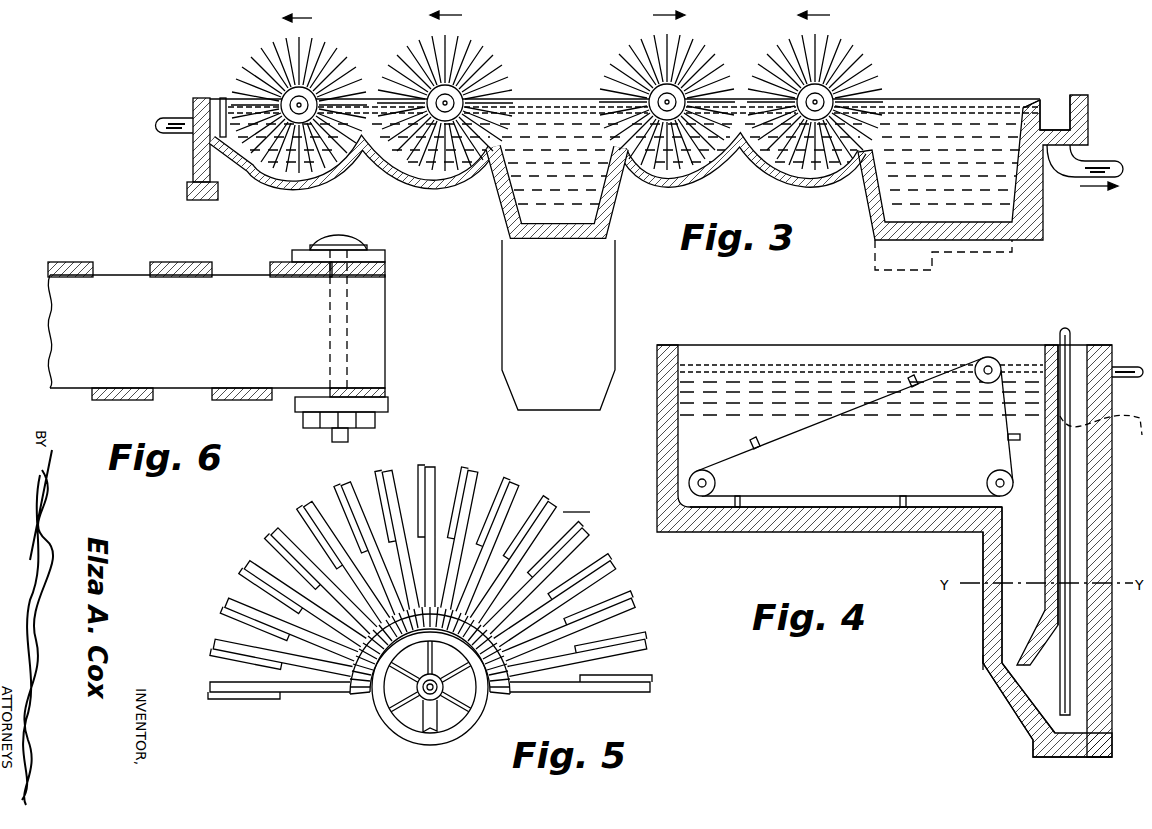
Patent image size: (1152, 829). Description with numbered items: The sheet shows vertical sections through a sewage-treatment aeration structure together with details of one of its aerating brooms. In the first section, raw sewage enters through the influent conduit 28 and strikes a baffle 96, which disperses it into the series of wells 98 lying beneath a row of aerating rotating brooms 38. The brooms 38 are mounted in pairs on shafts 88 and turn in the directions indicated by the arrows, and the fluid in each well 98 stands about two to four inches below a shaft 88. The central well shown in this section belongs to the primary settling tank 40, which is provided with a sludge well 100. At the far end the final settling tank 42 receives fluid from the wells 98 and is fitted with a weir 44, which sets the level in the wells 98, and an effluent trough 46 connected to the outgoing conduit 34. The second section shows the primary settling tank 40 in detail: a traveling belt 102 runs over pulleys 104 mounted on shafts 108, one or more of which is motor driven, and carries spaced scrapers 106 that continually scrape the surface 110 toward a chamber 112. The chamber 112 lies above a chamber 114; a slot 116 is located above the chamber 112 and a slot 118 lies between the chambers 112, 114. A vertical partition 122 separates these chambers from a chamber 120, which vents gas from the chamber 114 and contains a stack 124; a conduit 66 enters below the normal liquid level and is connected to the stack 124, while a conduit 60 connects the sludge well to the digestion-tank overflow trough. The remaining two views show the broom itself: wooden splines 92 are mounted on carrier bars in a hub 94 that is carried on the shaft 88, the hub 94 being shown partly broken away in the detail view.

In FIG. 3, the influent conduit 28 is at (172, 116).
In FIG. 3, the incoming conduit 34 is at (1126, 138).
In FIG. 3, the aerating rotating brooms 38 is at (397, 60).
In FIG. 5, the aerating rotating brooms 38 is at (580, 540).
In FIG. 3, the primary settling tank 40 is at (566, 209).
In FIG. 4, the primary settling tank 40 is at (870, 533).
In FIG. 3, the final settling tank 42 is at (973, 167).
In FIG. 3, the weir 44 is at (1032, 98).
In FIG. 3, the effluent trough 46 is at (1055, 112).
In FIG. 4, the conduit 60 is at (1143, 368).
In FIG. 4, the conduit 66 is at (1142, 422).
In FIG. 3, the shafts 88 is at (296, 100).
In FIG. 5, the shafts 88 is at (428, 700).
In FIG. 6, the splines 92 is at (160, 262).
In FIG. 5, the splines 92 is at (470, 485).
In FIG. 5, the hub 94 is at (380, 692).
In FIG. 3, the baffle 96 is at (221, 96).
In FIG. 3, the wells 98 is at (322, 188).
In FIG. 3, the sludge well 100 is at (558, 325).
In FIG. 4, the sludge well 100 is at (985, 650).
In FIG. 4, the traveling belt 102 is at (842, 417).
In FIG. 4, the pulleys 104 is at (698, 471).
In FIG. 4, the scrapers 106 is at (754, 446).
In FIG. 4, the shafts 108 is at (715, 480).
In FIG. 4, the surface 110 is at (768, 533).
In FIG. 4, the chamber 112 is at (1010, 600).
In FIG. 4, the chamber 114 is at (1040, 690).
In FIG. 4, the slot 116 is at (1042, 530).
In FIG. 4, the slot 118 is at (1010, 665).
In FIG. 4, the chamber 120 is at (1082, 632).
In FIG. 4, the vertical partition 122 is at (1053, 499).
In FIG. 4, the stack 124 is at (1058, 333).